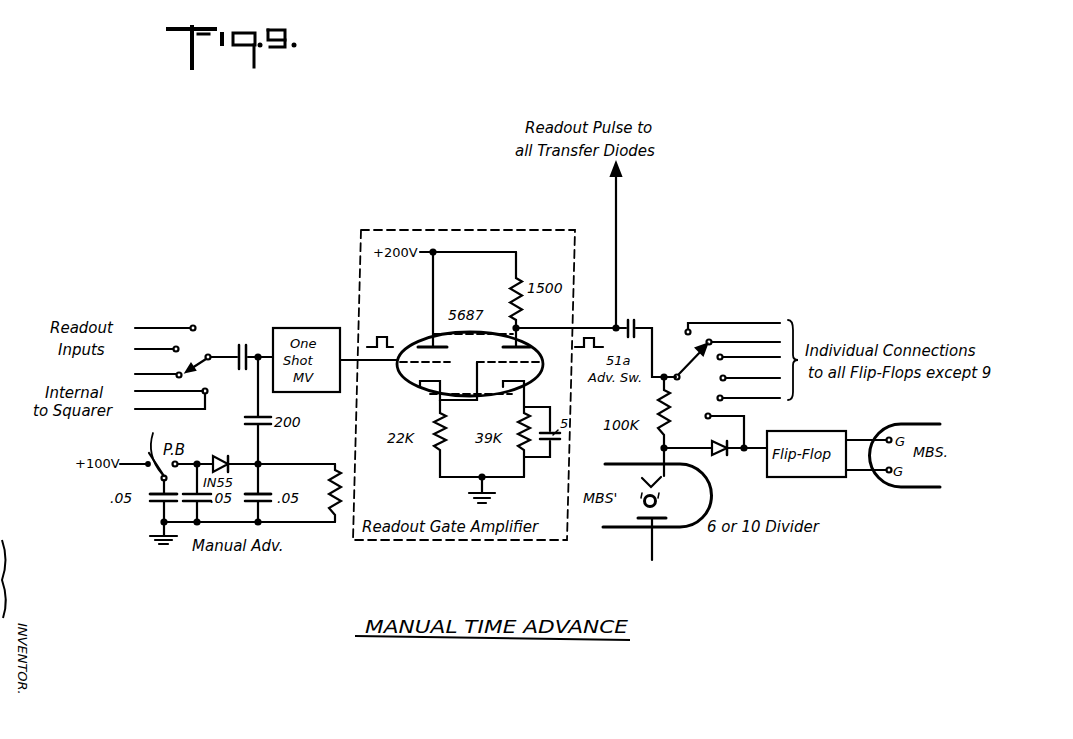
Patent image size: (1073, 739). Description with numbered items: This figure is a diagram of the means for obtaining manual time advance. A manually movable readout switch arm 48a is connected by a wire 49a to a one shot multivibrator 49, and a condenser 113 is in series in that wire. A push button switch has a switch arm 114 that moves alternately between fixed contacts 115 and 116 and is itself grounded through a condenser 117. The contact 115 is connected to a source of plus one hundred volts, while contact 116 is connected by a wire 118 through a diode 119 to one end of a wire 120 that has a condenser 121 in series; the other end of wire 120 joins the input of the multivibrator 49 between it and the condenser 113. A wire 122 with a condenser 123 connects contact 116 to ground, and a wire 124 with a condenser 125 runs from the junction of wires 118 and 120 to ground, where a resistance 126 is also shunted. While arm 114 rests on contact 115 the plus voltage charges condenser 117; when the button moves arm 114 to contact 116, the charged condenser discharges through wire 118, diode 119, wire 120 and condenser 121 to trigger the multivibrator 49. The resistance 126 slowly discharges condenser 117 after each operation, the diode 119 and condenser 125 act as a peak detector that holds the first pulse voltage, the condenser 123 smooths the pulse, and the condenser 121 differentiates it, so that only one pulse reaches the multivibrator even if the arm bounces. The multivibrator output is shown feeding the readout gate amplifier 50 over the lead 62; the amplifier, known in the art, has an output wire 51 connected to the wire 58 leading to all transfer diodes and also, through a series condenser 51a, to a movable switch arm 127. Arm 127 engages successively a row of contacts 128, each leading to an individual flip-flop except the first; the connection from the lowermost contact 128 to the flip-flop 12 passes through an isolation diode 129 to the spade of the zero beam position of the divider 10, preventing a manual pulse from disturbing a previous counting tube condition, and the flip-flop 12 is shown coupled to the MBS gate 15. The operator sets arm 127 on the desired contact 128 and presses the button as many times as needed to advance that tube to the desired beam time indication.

The readout switch arm 48a is at (213, 349).
The wire 49a is at (228, 352).
The condenser 113 is at (243, 342).
The one shot multivibrator 49 is at (300, 328).
The input lead to readout gate amplifier 62 is at (383, 364).
The condenser 121 is at (251, 416).
The fixed contact 115 is at (147, 461).
The switch arm 114 is at (155, 466).
The fixed contact 116 is at (167, 450).
The condenser 117 is at (150, 512).
The wire 118 is at (208, 458).
The diode 119 is at (231, 457).
The wire 120 is at (260, 452).
The wire 122 is at (195, 479).
The condenser 123 is at (171, 508).
The wire 124 is at (262, 513).
The condenser 125 is at (265, 493).
The resistance 126 is at (338, 476).
The readout gate amplifier 50 is at (483, 229).
The output wire 51 is at (550, 330).
The wire 58 is at (618, 240).
The condenser 51a is at (645, 335).
The movable switch arm 127 is at (691, 359).
The contacts 128 is at (690, 331).
The isolation diode 129 is at (716, 456).
The flip-flop 12 is at (803, 430).
The MBS gate 15 is at (921, 422).
The 6 or 10 divider 10 is at (681, 528).